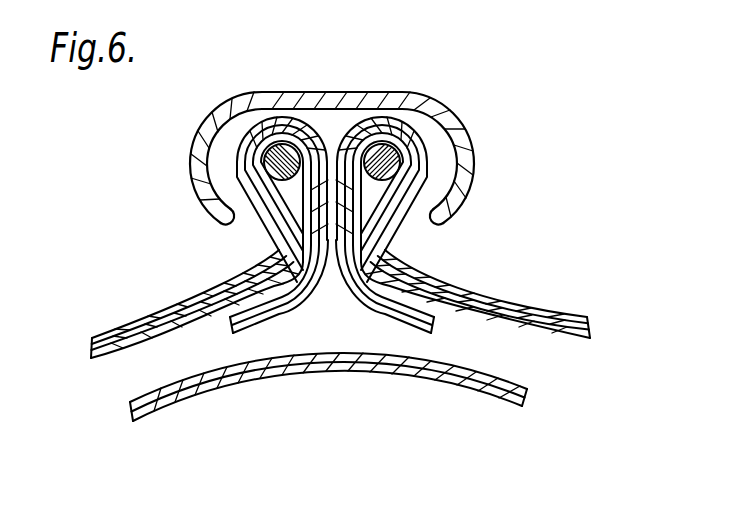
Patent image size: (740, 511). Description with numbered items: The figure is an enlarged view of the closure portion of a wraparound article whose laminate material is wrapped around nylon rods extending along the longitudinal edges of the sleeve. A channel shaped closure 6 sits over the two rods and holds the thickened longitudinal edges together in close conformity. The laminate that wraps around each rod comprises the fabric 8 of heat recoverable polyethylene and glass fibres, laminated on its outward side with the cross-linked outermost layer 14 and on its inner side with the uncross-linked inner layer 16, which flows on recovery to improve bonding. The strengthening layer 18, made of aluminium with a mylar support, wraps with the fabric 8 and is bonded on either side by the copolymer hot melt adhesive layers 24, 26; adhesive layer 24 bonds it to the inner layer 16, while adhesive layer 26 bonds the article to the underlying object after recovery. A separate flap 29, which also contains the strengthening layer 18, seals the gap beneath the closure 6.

The channel shaped closure 6 is at (362, 97).
The fabric 8 is at (388, 225).
The outermost layer 14 is at (388, 225).
The inner layer 16 is at (443, 286).
The strengthening layer 18 is at (342, 365).
The hot melt adhesive layer 24 is at (342, 365).
The hot melt adhesive layer 26 is at (500, 320).
The separate flap 29 is at (128, 404).